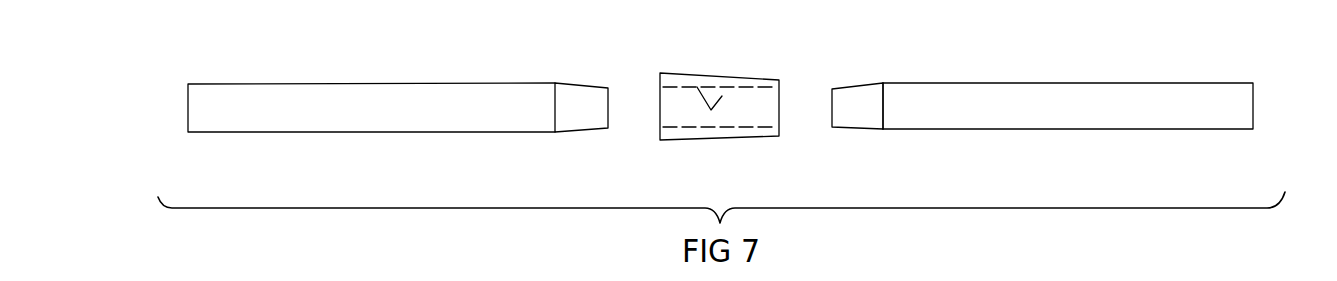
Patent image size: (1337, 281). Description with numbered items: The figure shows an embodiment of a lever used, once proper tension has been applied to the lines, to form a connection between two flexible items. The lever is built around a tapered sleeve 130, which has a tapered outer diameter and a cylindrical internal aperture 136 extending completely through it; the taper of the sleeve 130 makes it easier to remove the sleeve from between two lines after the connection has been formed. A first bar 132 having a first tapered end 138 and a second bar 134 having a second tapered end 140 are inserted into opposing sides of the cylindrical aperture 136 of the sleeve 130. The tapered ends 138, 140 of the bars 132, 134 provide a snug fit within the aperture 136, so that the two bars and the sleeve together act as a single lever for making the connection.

The tapered sleeve 130 is at (719, 127).
The first bar 132 is at (1068, 127).
The second bar 134 is at (371, 132).
The cylindrical internal aperture 136 is at (751, 76).
The first tapered end 138 is at (875, 133).
The second tapered end 140 is at (601, 132).